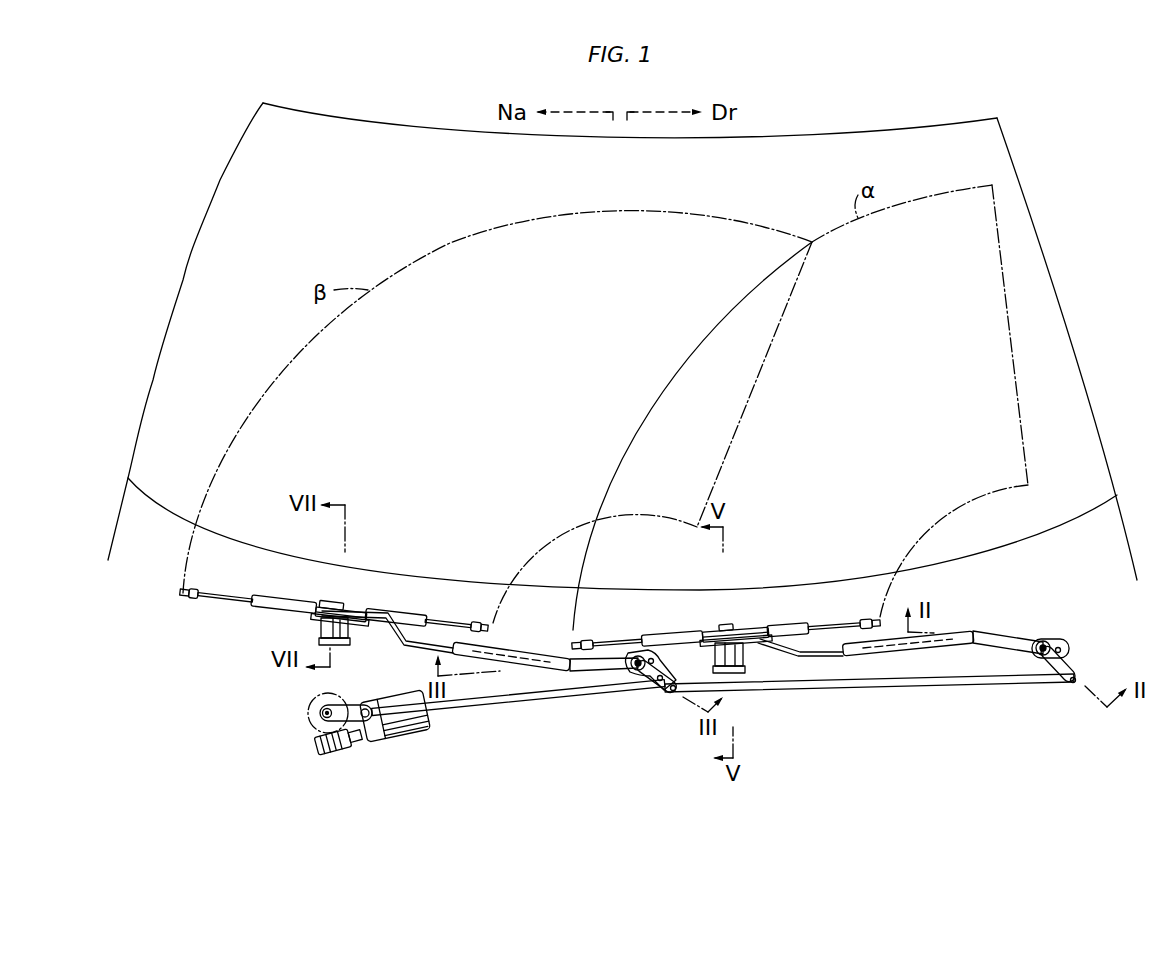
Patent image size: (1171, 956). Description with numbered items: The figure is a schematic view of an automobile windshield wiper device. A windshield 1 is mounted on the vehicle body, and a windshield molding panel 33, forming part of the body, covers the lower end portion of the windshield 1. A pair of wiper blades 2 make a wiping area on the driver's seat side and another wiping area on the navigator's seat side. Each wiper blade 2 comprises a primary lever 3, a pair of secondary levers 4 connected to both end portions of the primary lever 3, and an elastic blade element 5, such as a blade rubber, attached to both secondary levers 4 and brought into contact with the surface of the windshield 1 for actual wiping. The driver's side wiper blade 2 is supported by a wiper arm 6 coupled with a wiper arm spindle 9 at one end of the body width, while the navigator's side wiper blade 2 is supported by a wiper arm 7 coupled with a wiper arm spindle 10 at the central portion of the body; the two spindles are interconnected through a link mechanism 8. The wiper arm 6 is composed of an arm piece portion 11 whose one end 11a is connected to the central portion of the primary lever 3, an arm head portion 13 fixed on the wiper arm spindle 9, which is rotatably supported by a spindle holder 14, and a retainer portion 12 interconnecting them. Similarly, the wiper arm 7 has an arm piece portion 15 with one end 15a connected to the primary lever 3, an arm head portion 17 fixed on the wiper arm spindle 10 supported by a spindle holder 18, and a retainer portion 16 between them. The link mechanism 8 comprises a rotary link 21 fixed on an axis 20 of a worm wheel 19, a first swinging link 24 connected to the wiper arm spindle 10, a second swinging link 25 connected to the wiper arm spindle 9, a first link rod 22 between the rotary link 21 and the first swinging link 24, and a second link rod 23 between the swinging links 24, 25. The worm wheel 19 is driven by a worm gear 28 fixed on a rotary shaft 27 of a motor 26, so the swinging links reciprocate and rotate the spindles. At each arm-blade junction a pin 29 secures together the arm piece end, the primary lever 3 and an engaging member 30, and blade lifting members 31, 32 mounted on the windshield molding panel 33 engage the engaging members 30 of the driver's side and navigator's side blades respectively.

The windshield 1 is at (1067, 340).
The wiper blade 2 is at (392, 596).
The primary lever 3 is at (277, 599).
The secondary lever 4 is at (237, 596).
The elastic blade element 5 is at (482, 623).
The wiper arm 6 is at (992, 626).
The wiper arm 7 is at (524, 640).
The link mechanism 8 is at (723, 730).
The wiper arm spindle 9 is at (1051, 643).
The wiper arm spindle 10 is at (634, 672).
The arm piece portion 11 is at (818, 660).
The one end of arm piece portion 11a is at (746, 626).
The retainer portion 12 is at (912, 644).
The arm head portion 13 is at (998, 643).
The spindle holder 14 is at (1068, 651).
The arm piece portion 15 is at (401, 645).
The one end of arm piece portion 15a is at (353, 604).
The retainer portion 16 is at (500, 647).
The arm head portion 17 is at (576, 676).
The spindle holder 18 is at (659, 663).
The worm wheel 19 is at (304, 700).
The axis of worm wheel 20 is at (321, 713).
The rotary link 21 is at (356, 704).
The first link rod 22 is at (520, 703).
The second link rod 23 is at (889, 686).
The first swinging link 24 is at (660, 694).
The second swinging link 25 is at (1080, 670).
The motor 26 is at (413, 739).
The rotary shaft 27 is at (353, 742).
The worm gear 28 is at (322, 749).
The pin 29 is at (336, 599).
The engaging member 30 is at (322, 630).
The blade lifting member 31 is at (748, 647).
The blade lifting member 32 is at (350, 631).
The windshield molding panel 33 is at (1125, 553).